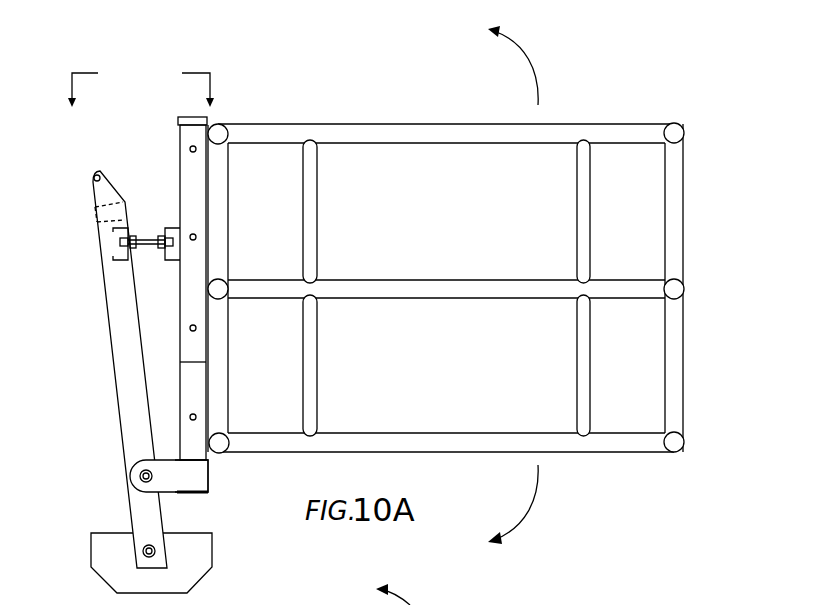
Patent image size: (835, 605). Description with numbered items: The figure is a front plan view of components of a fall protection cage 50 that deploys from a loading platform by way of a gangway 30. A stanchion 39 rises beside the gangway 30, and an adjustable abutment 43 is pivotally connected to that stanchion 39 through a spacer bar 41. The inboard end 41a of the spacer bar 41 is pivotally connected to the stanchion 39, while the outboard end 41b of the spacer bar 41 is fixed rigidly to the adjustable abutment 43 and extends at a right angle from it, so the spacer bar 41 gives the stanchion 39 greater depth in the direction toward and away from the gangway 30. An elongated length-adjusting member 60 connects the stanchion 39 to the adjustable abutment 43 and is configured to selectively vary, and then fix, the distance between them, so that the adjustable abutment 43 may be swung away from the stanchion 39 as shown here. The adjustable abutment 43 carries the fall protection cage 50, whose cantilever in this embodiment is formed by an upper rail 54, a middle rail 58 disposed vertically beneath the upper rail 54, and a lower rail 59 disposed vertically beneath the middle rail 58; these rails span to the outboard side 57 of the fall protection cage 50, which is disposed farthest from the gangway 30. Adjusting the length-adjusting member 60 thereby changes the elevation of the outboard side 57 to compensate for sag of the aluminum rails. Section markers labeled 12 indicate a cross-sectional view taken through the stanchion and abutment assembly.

The section line 12- 12 is at (144, 90).
The gangway 30 is at (98, 553).
The stanchion 39 is at (128, 393).
The spacer bar 41 is at (173, 475).
The inboard end of the spacer bar 41a is at (128, 476).
The outboard end of the spacer bar 41b is at (203, 472).
The adjustable abutment 43 is at (178, 152).
The fall protection cage 50 is at (627, 604).
The upper rail 54 is at (431, 128).
The outboard side of the fall protection cage 57 is at (682, 223).
The middle rail 58 is at (470, 283).
The lower rail 59 is at (450, 437).
The elongated length-adjusting member 60 is at (147, 218).